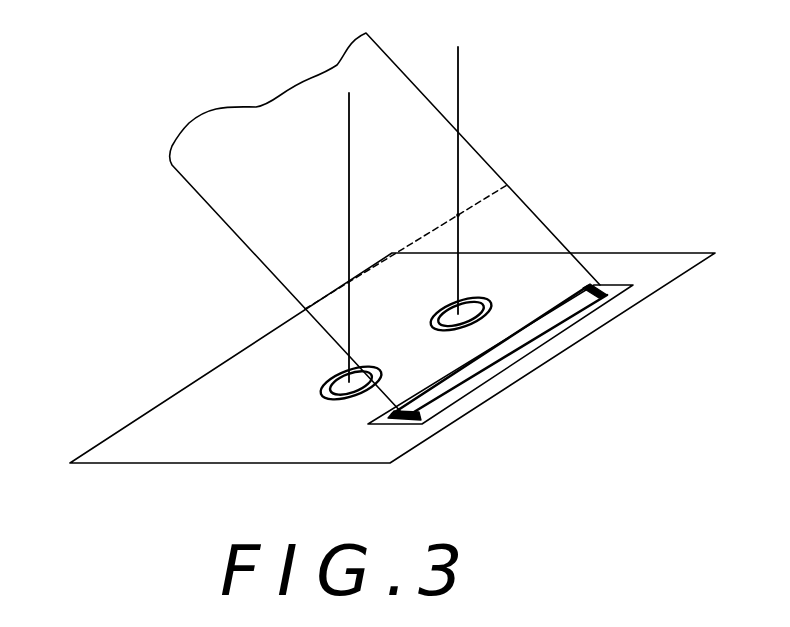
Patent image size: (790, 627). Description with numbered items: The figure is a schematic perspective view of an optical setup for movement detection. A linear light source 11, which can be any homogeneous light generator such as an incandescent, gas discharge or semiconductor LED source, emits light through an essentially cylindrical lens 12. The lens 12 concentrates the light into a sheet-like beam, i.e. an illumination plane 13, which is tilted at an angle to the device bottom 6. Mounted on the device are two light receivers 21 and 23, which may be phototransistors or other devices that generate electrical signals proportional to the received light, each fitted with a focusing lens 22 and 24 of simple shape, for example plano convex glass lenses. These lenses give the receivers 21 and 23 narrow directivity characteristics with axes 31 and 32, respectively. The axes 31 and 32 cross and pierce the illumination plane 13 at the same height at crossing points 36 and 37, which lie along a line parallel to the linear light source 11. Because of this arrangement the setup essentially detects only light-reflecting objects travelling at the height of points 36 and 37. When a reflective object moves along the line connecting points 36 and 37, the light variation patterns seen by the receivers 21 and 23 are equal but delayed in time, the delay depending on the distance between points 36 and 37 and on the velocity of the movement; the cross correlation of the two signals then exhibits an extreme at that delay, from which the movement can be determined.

The device bottom 6 is at (217, 383).
The linear light source 11 is at (422, 422).
The lens 12 is at (485, 358).
The sheet-like light field 13 is at (253, 227).
The light receiver 21 is at (321, 391).
The focusing lens 22 is at (332, 398).
The light receiver 23 is at (486, 300).
The focusing lens 24 is at (439, 313).
The axis 31 is at (349, 134).
The axis 32 is at (458, 72).
The focus point 36 is at (350, 283).
The focus point 37 is at (458, 214).